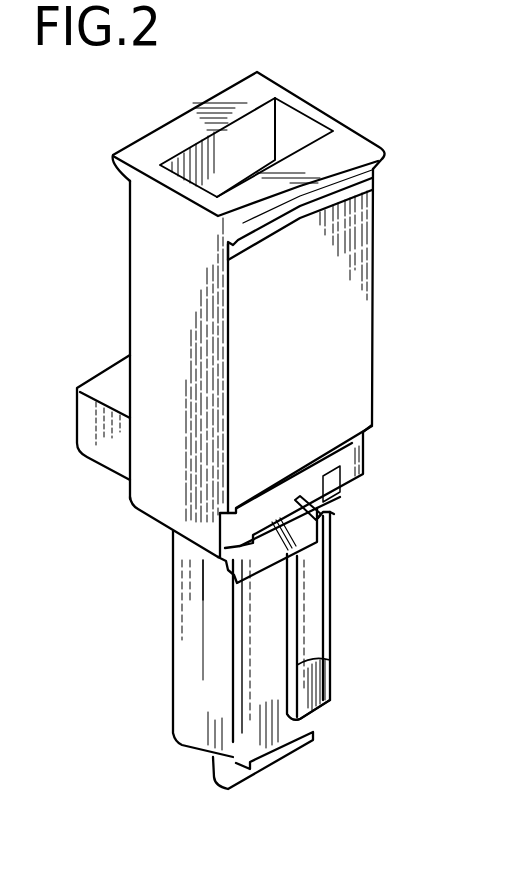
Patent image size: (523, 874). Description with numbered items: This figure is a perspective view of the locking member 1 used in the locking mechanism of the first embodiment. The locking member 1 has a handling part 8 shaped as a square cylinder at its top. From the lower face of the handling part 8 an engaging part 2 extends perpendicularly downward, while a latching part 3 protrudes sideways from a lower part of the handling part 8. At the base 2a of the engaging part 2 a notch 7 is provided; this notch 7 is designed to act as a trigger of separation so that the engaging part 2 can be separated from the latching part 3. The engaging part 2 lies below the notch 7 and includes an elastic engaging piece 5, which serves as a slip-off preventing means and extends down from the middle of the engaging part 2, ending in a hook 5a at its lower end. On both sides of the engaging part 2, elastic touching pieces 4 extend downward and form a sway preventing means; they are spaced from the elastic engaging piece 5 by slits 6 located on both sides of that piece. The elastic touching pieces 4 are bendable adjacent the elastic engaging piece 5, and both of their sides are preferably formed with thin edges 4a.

The locking member 1 is at (360, 97).
The engaging part 2 is at (331, 568).
The base 2a is at (330, 537).
The latching part 3 is at (107, 383).
The elastic touching pieces 4 is at (190, 668).
The thin edges 4a is at (171, 598).
The elastic engaging piece 5 is at (300, 718).
The hook 5a is at (284, 757).
The slits 6 is at (331, 670).
The notch 7 is at (322, 516).
The handling part 8 is at (360, 313).